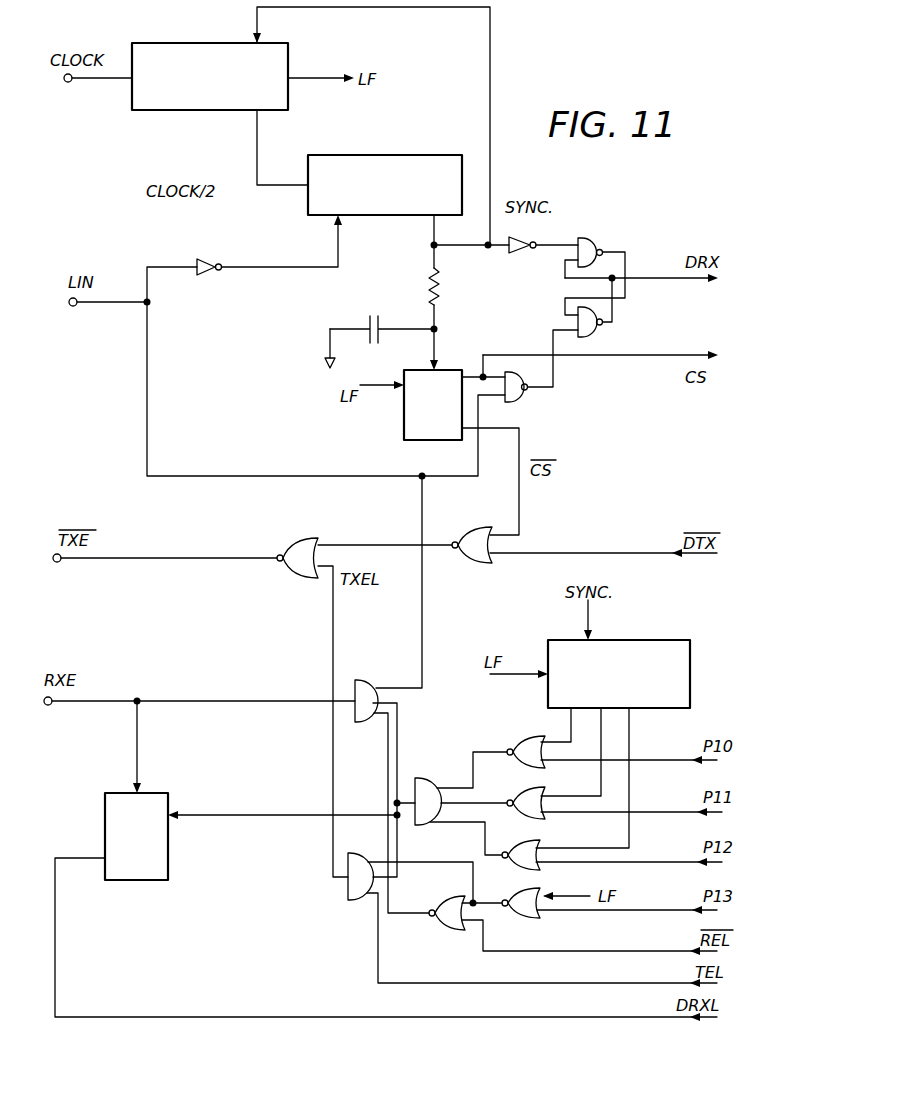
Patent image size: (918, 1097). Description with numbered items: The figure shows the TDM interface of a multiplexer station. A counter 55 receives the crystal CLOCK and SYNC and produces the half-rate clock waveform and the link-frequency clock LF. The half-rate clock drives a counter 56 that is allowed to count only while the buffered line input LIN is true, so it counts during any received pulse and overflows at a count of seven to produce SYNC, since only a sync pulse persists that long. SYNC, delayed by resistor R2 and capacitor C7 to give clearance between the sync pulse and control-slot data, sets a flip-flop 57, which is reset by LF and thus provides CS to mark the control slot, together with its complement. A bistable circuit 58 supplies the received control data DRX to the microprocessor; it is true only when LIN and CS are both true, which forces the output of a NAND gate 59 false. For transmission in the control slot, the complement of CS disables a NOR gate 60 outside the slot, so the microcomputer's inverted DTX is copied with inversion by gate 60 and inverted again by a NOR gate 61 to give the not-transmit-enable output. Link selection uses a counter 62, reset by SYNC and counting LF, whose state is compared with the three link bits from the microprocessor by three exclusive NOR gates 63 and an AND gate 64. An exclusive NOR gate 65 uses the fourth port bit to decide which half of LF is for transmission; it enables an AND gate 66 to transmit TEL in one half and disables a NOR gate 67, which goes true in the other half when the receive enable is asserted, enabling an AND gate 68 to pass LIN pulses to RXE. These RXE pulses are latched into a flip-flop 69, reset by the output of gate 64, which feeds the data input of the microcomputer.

The counter 55 is at (189, 44).
The counter 56 is at (382, 155).
The flip-flop 57 is at (402, 443).
The bistable circuit 58 is at (604, 240).
The NAND gate 59 is at (519, 397).
The NOR gate 60 is at (469, 567).
The NOR gate 61 is at (296, 539).
The counter 62 is at (690, 678).
The exclusive NOR gates 63 is at (522, 740).
The AND gate 64 is at (426, 778).
The exclusive NOR gate 65 is at (518, 918).
The AND gate 66 is at (341, 904).
The NOR gate 67 is at (440, 928).
The AND gate 68 is at (367, 680).
The flip-flop 69 is at (129, 884).
The resistor R2 is at (448, 286).
The capacitor C7 is at (379, 329).